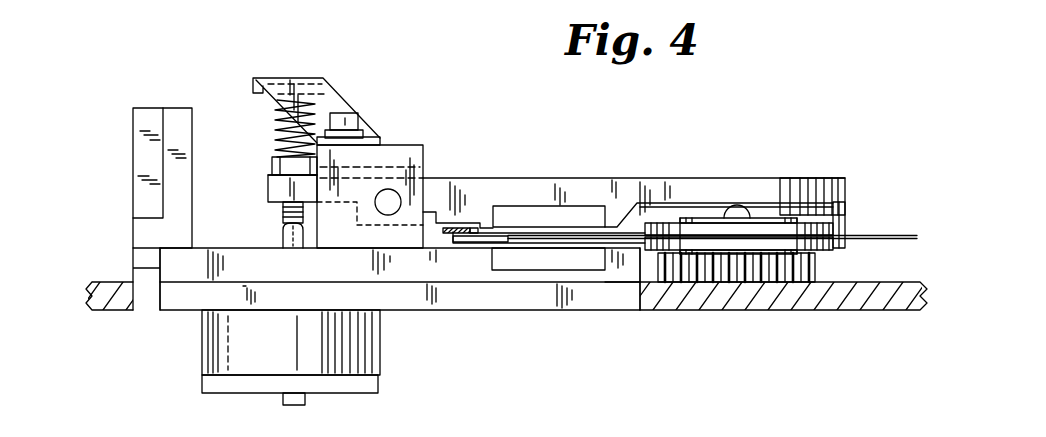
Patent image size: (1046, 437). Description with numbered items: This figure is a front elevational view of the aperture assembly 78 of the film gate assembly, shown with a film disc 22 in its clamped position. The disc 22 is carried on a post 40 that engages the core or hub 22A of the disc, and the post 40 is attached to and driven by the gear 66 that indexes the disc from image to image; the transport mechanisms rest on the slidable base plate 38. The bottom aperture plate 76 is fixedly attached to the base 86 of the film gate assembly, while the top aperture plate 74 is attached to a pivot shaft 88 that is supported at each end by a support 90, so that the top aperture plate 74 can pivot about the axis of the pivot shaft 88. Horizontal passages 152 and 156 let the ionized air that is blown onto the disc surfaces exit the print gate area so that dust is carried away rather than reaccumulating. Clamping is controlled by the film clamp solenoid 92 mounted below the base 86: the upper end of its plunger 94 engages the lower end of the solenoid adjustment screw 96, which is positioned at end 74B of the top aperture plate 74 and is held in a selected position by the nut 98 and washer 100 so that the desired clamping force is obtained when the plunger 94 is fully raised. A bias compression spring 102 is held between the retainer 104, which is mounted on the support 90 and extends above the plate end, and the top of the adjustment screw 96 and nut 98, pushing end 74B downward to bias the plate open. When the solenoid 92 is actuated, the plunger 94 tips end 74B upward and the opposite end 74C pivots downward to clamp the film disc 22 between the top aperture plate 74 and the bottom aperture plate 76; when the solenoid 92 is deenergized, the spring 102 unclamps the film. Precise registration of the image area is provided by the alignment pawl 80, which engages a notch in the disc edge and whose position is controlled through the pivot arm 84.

The film disc 22 is at (881, 232).
The core or hub 22A is at (836, 242).
The slidable base plate 38 is at (807, 298).
The post 40 is at (744, 212).
The gear 66 is at (815, 265).
The top aperture plate 74 is at (627, 182).
The end of aperture plate 74B is at (270, 192).
The opposite end of aperture plate 74C is at (822, 180).
The bottom aperture plate 76 is at (603, 275).
The aperture assembly 78 is at (710, 137).
The alignment pawl 80 is at (462, 240).
The pivot arm 84 is at (452, 238).
The base 86 is at (583, 300).
The pivot shaft 88 is at (393, 203).
The support 90 is at (381, 169).
The film clamp solenoid 92 is at (210, 352).
The plunger 94 is at (288, 238).
The solenoid adjustment screw 96 is at (283, 213).
The nut 98 is at (272, 165).
The washer 100 is at (272, 175).
The bias compression spring 102 is at (273, 124).
The retainer 104 is at (331, 91).
The horizontal passage 152 is at (542, 215).
The horizontal passage 156 is at (515, 258).